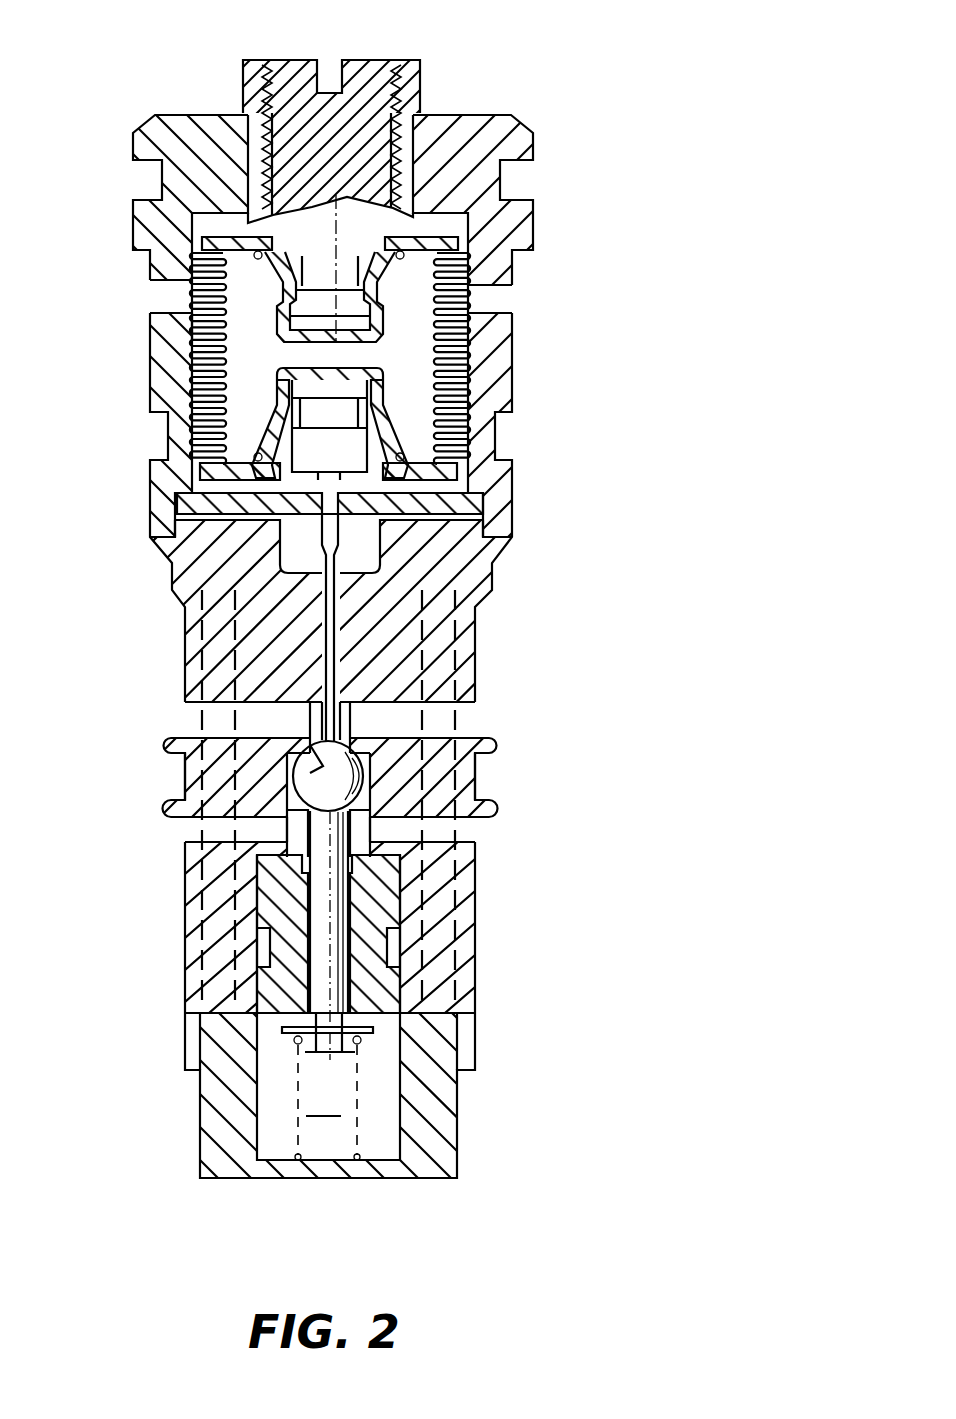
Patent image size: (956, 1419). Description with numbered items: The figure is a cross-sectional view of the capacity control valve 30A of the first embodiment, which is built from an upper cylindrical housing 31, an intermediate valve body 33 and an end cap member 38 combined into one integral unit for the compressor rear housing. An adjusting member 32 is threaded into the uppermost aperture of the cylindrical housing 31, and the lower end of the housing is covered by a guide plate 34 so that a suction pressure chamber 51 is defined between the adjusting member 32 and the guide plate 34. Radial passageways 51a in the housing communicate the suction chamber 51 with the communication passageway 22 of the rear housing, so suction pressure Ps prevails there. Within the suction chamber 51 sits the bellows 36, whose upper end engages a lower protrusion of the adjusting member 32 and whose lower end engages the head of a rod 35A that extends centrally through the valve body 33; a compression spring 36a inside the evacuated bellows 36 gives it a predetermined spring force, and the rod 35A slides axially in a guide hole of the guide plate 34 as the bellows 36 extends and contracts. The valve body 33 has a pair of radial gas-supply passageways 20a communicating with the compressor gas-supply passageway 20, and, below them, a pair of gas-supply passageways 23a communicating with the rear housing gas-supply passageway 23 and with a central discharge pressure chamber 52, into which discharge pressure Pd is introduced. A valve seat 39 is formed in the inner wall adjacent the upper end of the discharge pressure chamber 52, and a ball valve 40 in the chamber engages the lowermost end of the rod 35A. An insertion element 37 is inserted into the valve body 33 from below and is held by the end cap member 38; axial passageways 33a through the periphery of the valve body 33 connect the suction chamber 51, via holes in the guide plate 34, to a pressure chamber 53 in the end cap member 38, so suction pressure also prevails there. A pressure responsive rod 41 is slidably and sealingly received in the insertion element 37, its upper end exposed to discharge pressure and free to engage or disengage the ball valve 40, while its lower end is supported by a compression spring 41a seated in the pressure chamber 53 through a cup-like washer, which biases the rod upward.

The capacity control valve 30A is at (552, 97).
The adjusting member 32 is at (358, 68).
The upper cylindrical housing 31 is at (505, 378).
The radial passageways 51a is at (178, 280).
The suction pressure chamber 51 is at (190, 329).
The communication passageway 22 is at (490, 300).
The bellows 36 is at (178, 428).
The compression spring 36a is at (280, 465).
The guide plate 34 is at (478, 501).
The valve body 33 is at (467, 618).
The axial passageways 33a is at (445, 638).
The radial gas-supply passageways 20a is at (185, 720).
The gas-supply passageway 20 is at (405, 720).
The rod 35A is at (330, 643).
The valve seat 39 is at (315, 768).
The ball valve 40 is at (353, 776).
The discharge pressure chamber 52 is at (290, 802).
The gas-supply passageways 23a is at (213, 820).
The gas-supply passageway 23 is at (422, 829).
The end cap member 38 is at (440, 1118).
The insertion element 37 is at (397, 988).
The pressure responsive rod 41 is at (335, 927).
The compression spring 41a is at (293, 1155).
The pressure chamber 53 is at (255, 1130).